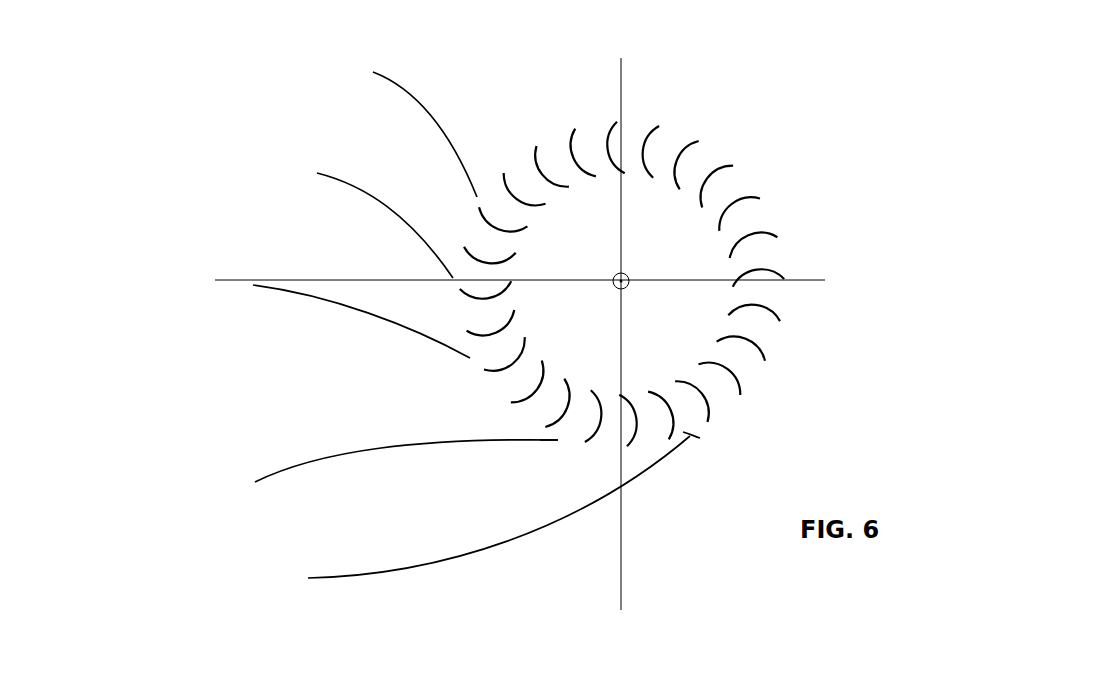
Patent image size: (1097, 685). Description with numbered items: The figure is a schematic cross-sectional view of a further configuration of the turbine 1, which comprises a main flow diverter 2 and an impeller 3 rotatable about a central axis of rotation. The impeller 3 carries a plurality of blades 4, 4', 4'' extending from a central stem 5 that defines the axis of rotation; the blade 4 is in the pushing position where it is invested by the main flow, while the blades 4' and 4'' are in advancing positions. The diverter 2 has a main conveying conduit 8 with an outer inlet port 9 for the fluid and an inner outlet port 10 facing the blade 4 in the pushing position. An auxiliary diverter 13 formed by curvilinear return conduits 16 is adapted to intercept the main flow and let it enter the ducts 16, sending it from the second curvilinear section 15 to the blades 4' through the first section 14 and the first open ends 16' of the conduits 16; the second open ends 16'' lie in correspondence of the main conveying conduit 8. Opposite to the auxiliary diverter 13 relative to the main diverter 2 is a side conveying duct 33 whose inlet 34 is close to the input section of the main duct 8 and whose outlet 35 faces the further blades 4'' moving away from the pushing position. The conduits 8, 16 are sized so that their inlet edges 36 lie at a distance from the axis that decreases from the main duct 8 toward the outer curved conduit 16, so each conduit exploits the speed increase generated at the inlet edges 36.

The turbine 1 is at (720, 128).
The main flow diverter 2 is at (180, 424).
The impeller 3 is at (803, 248).
The blade 4 is at (622, 284).
The blade 4' is at (550, 128).
The blade 4'' is at (742, 379).
The central stem 5 is at (629, 280).
The main conveying conduit 8 is at (358, 407).
The outer inlet port 9 is at (256, 395).
The inner outlet port 10 is at (540, 418).
The auxiliary diverter 13 is at (218, 162).
The inlet section 14 is at (520, 271).
The outlet section 15 is at (293, 190).
The return conduit 16 is at (386, 202).
The first open end 16' is at (480, 264).
The second open end 16'' is at (287, 161).
The side conveying duct 33 is at (525, 518).
The inlet 34 is at (278, 527).
The outlet 35 is at (683, 432).
The inlet edge 36 is at (375, 72).